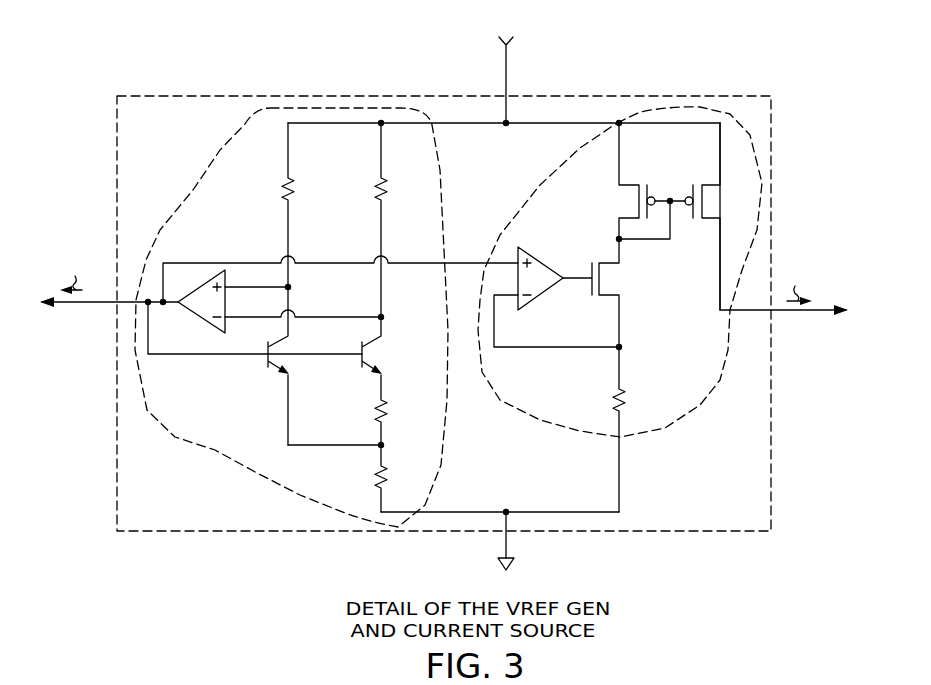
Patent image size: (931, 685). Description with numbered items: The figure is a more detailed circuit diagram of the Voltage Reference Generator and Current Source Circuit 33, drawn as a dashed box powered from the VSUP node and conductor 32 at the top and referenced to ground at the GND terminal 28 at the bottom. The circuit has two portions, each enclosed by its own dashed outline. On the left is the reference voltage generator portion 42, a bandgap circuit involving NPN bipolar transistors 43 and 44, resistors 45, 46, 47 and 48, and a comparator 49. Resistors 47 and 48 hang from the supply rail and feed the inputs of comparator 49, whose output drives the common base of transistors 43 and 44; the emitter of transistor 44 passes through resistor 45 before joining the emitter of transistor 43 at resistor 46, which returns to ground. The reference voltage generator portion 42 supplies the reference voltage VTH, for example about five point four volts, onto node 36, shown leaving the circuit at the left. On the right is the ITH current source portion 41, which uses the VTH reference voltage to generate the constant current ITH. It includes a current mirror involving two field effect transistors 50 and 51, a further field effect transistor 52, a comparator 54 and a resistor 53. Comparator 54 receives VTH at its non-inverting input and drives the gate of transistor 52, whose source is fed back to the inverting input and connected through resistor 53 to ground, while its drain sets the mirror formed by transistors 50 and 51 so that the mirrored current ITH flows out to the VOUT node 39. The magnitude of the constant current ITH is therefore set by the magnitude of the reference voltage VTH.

The ground conductor 28 is at (508, 544).
The VSUP node and conductor 32 is at (508, 70).
The Voltage Reference Generator and Current Source Circuit (VRGCSC) 33 is at (180, 96).
The node 36 is at (90, 305).
The VOUT node 39 is at (820, 313).
The ITH current source portion 41 is at (680, 107).
The reference voltage generator portion 42 is at (333, 108).
The NPN bipolar transistor 43 is at (283, 348).
The NPN bipolar transistor 44 is at (380, 355).
The resistor 45 is at (389, 416).
The resistor 46 is at (389, 477).
The resistor 47 is at (296, 189).
The resistor 48 is at (389, 189).
The comparator 49 is at (201, 301).
The N-channel field effect transistor 50 is at (621, 201).
The N-channel field effect transistor 51 is at (712, 201).
The N-channel field effect transistor 52 is at (627, 280).
The resistor 53 is at (628, 395).
The comparator 54 is at (540, 278).